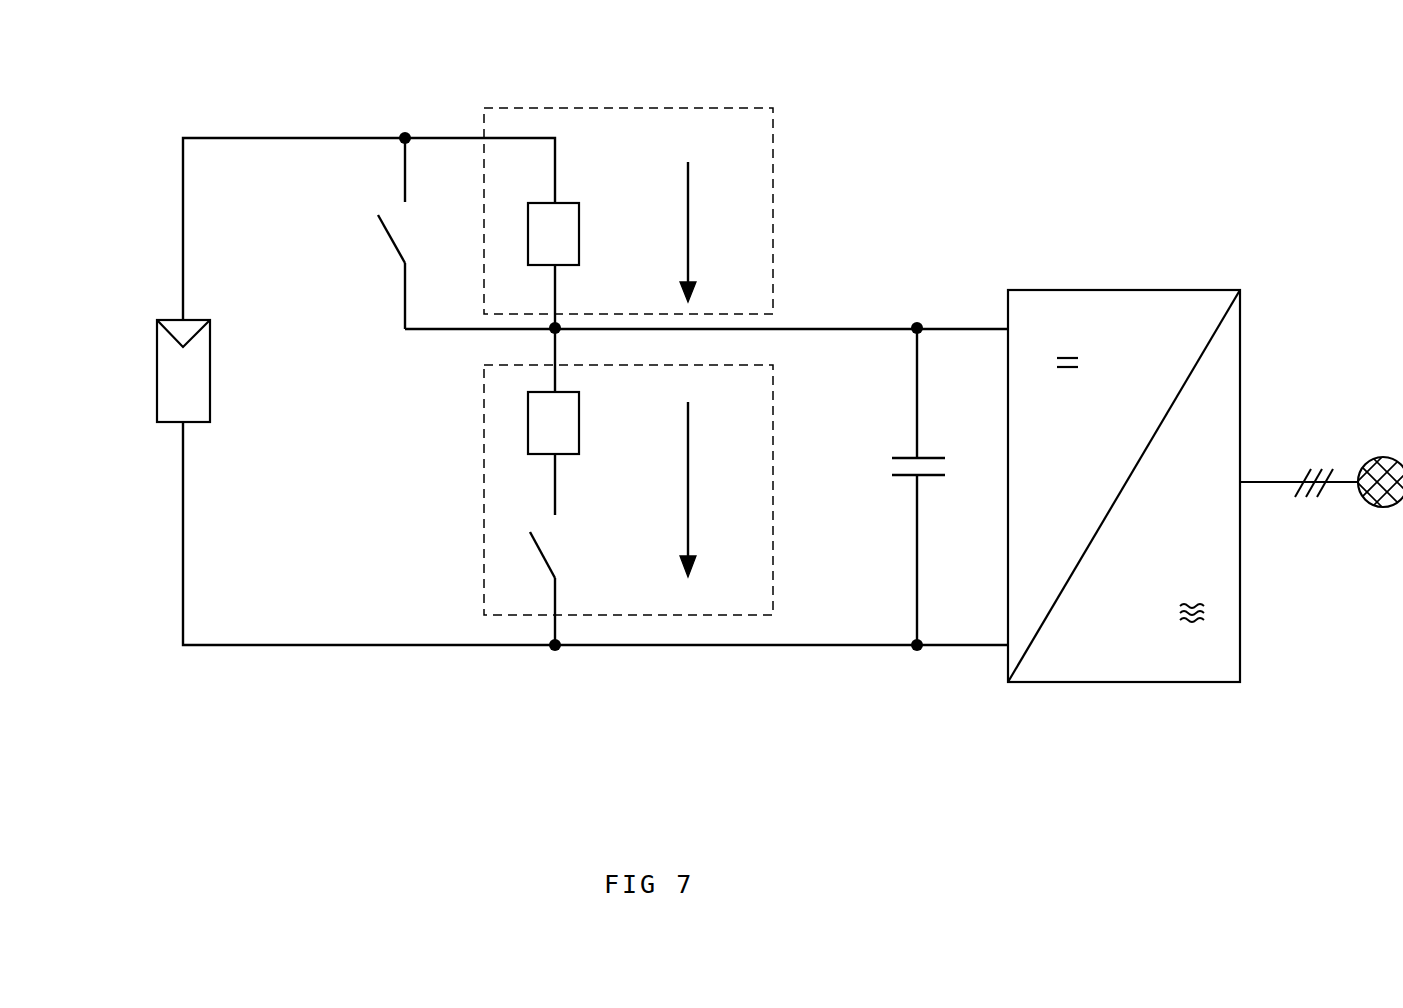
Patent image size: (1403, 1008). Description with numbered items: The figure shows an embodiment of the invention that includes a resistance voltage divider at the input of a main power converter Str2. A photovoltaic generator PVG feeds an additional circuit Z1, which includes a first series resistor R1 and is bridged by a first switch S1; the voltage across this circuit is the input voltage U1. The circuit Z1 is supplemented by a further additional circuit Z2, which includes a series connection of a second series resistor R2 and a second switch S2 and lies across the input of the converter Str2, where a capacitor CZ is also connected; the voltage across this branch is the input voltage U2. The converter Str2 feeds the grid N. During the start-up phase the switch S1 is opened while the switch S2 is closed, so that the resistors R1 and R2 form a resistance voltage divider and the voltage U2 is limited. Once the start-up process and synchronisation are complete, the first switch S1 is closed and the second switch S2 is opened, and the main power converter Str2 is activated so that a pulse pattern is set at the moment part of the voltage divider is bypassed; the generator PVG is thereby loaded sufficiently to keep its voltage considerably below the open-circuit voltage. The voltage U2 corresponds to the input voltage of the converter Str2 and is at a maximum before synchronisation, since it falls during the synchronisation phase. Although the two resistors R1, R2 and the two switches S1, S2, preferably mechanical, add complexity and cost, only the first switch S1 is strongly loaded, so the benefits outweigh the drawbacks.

The generator PVG is at (140, 371).
The first switch S1 is at (420, 233).
The first series resistor R1 is at (584, 265).
The additional circuit Z1 is at (645, 108).
The input voltage U1 is at (709, 232).
The second series resistor R2 is at (584, 421).
The input voltage U2 is at (709, 489).
The second switch S2 is at (578, 588).
The further additional circuit Z2 is at (485, 602).
The intermediate circuit capacitor CZ is at (898, 486).
The main power converter Str2 is at (1124, 454).
The power grid N is at (1321, 482).